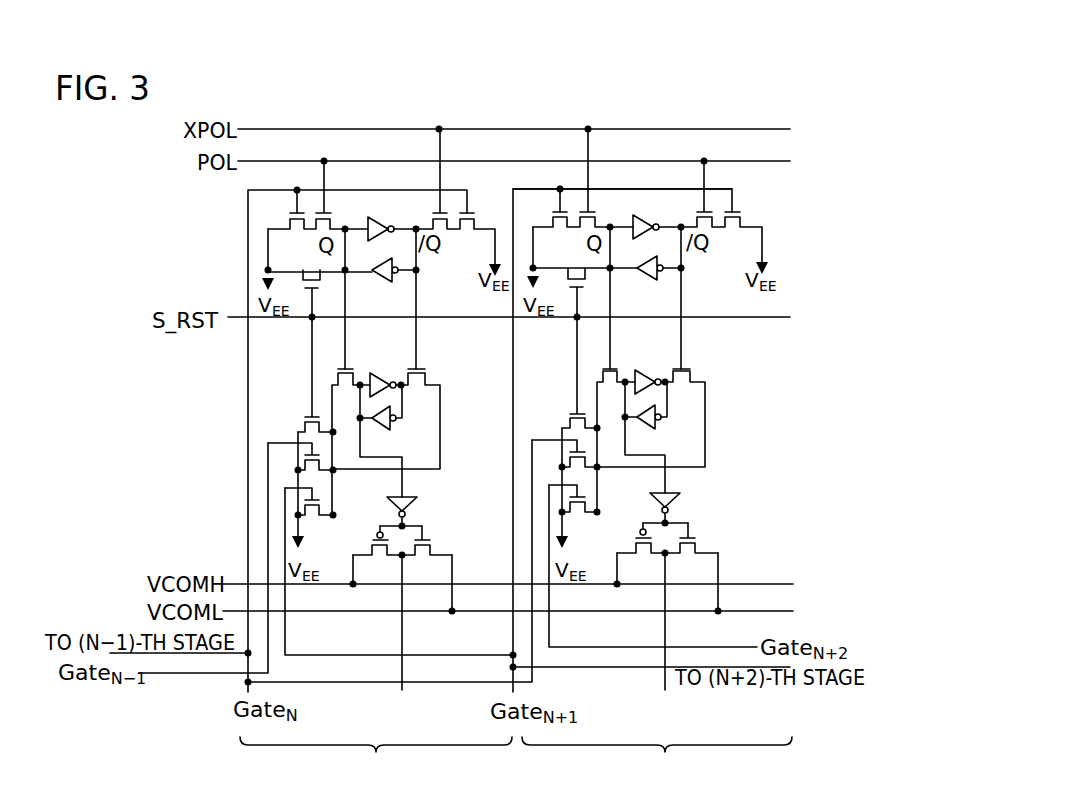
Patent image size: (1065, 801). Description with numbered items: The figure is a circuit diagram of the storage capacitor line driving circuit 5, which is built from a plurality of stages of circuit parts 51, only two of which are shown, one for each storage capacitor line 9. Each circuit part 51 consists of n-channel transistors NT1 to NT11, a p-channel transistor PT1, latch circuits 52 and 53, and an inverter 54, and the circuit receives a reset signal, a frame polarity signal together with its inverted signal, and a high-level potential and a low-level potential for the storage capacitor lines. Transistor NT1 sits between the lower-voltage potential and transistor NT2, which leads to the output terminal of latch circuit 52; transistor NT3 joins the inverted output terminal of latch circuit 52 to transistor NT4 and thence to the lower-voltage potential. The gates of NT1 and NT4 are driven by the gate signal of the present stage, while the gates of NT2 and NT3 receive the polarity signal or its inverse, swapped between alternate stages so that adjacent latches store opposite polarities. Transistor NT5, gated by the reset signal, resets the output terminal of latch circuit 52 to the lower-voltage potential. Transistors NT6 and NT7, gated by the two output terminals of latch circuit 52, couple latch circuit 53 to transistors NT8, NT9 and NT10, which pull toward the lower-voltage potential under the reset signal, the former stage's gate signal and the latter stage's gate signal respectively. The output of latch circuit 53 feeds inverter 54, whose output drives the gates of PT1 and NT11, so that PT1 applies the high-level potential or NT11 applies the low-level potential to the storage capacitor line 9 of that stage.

The storage capacitor line driving circuit 5 is at (743, 97).
The storage capacitor line 9 is at (400, 689).
The circuit part 51 is at (516, 756).
The latch circuit 52 is at (385, 209).
The latch circuit 53 is at (407, 422).
The inverter 54 is at (398, 512).
The n-channel transistor NT1 is at (297, 190).
The n-channel transistor NT2 is at (324, 161).
The n-channel transistor NT3 is at (440, 129).
The n-channel transistor NT4 is at (467, 190).
The n-channel transistor NT5 is at (312, 286).
The n-channel transistor NT6 is at (351, 367).
The n-channel transistor NT7 is at (420, 367).
The n-channel transistor NT8 is at (308, 415).
The n-channel transistor NT9 is at (291, 447).
The n-channel transistor NT10 is at (291, 493).
The n-channel transistor NT11 is at (432, 540).
The p-channel transistor PT1 is at (377, 536).